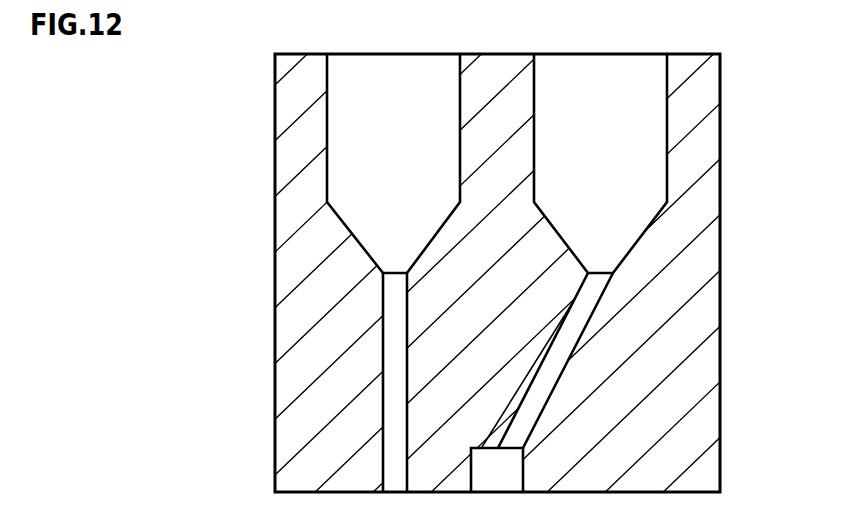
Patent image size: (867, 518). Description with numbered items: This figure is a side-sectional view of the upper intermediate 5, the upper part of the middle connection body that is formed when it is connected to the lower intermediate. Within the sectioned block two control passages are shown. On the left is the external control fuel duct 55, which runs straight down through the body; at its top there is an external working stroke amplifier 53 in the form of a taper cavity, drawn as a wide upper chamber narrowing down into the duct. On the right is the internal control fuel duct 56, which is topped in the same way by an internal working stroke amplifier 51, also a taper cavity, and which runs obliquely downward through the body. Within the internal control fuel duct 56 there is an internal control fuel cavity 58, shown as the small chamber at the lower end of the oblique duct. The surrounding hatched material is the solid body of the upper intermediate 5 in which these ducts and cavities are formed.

The upper intermediate 5 is at (780, 424).
The internal working stroke amplifier 51 is at (780, 118).
The external working stroke amplifier 53 is at (240, 153).
The external control fuel duct 55 is at (240, 297).
The internal control fuel duct 56 is at (780, 237).
The internal control fuel cavity 58 is at (780, 361).